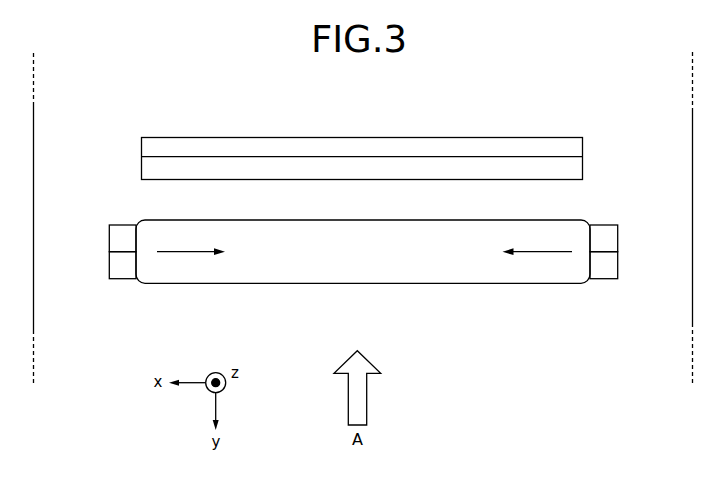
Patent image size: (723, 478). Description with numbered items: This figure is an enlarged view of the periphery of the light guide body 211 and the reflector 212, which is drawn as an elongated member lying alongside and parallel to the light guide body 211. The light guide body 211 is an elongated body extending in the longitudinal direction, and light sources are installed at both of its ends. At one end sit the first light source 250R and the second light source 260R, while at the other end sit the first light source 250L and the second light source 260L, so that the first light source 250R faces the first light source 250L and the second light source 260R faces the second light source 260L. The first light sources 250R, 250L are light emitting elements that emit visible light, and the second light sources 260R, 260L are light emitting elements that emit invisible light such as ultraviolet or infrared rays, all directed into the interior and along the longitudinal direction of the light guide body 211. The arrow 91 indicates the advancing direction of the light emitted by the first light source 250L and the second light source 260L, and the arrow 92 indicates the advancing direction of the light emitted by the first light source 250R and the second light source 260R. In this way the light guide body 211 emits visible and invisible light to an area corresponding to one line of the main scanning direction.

The reflector 212 is at (585, 168).
The light guide body 211 is at (500, 284).
The first light source 250L is at (107, 237).
The second light source 260L is at (107, 262).
The first light source 250R is at (618, 238).
The second light source 260R is at (618, 264).
The arrow 91 is at (159, 250).
The arrow 92 is at (530, 250).